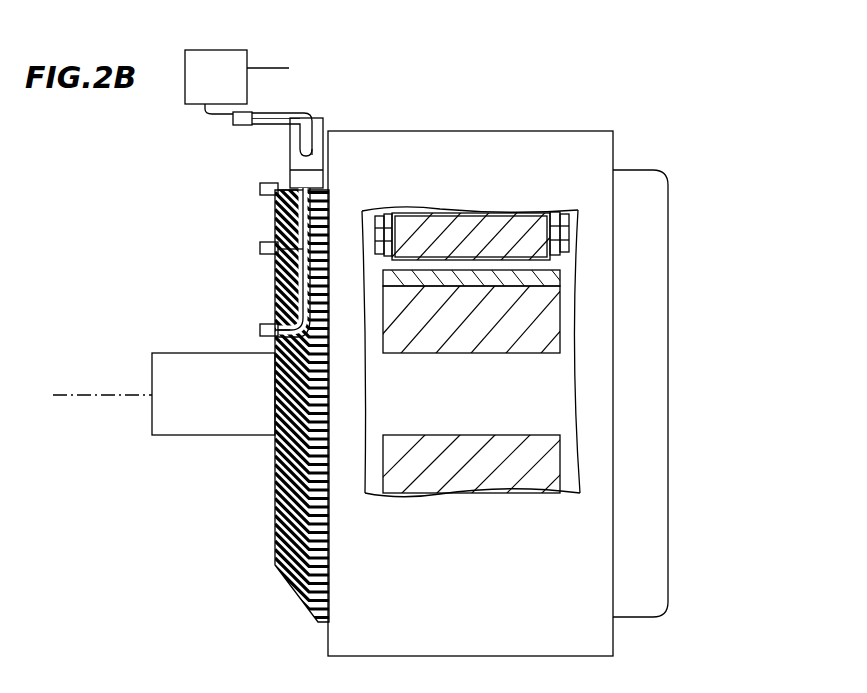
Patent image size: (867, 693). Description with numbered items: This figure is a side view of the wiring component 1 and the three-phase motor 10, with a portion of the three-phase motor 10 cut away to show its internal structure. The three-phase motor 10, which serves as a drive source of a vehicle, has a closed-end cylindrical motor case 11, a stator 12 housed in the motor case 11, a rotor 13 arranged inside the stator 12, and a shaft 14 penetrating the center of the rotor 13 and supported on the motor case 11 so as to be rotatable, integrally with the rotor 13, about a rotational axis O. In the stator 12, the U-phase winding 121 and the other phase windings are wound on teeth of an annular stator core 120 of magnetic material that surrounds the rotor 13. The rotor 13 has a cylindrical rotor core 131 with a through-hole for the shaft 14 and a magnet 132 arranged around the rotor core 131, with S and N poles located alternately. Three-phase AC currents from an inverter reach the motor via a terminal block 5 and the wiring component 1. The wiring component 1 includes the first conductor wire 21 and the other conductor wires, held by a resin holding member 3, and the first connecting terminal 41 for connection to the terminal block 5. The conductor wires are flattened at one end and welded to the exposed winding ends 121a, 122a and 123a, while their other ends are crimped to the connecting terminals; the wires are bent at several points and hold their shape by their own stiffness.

The wiring component 1 is at (323, 105).
The resin holding member 3 is at (290, 165).
The terminal block 5 is at (195, 50).
The three-phase motor 10 is at (687, 117).
The motor case 11 is at (452, 131).
The stator 12 is at (424, 212).
The stator core 120 is at (498, 212).
The U-phase winding 121 is at (571, 232).
The rotor 13 is at (569, 375).
The rotor core 131 is at (556, 322).
The magnet 132 is at (556, 278).
The shaft 14 is at (203, 423).
The first conductor wire 21 is at (280, 115).
The first connecting terminal 41 is at (214, 113).
The end of U-phase winding 121a is at (262, 330).
The end of V-phase winding 122a is at (262, 250).
The end of W-phase winding 123a is at (262, 190).
The rotational axis O is at (75, 393).